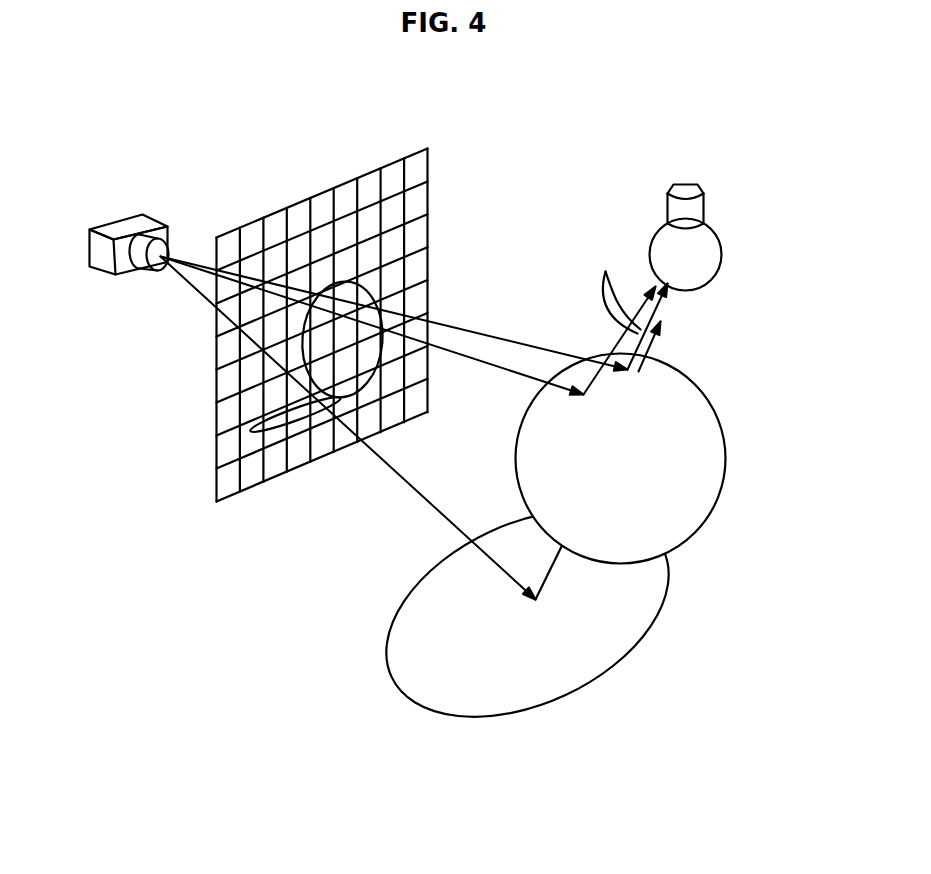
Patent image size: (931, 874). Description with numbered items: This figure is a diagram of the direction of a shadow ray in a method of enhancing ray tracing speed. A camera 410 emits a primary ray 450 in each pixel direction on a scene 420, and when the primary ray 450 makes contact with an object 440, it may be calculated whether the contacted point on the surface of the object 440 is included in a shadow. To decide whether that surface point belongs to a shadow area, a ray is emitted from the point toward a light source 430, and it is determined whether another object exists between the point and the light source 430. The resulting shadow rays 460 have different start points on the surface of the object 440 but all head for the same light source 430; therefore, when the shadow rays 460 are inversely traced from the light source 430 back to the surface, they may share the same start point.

The camera 410 is at (102, 257).
The scene 420 is at (425, 163).
The light source 430 is at (685, 187).
The object 440 is at (710, 402).
The primary ray 450 is at (455, 333).
The shadow rays 460 is at (612, 289).